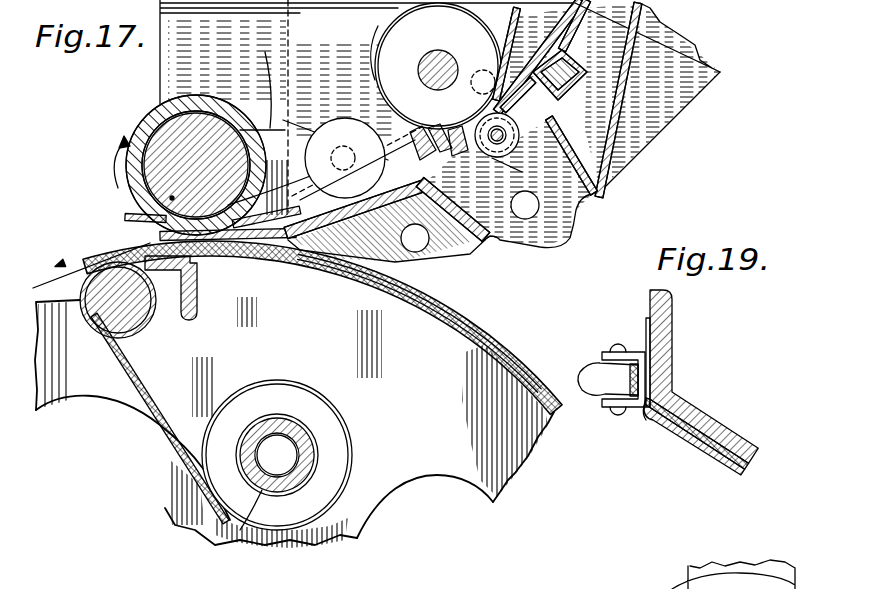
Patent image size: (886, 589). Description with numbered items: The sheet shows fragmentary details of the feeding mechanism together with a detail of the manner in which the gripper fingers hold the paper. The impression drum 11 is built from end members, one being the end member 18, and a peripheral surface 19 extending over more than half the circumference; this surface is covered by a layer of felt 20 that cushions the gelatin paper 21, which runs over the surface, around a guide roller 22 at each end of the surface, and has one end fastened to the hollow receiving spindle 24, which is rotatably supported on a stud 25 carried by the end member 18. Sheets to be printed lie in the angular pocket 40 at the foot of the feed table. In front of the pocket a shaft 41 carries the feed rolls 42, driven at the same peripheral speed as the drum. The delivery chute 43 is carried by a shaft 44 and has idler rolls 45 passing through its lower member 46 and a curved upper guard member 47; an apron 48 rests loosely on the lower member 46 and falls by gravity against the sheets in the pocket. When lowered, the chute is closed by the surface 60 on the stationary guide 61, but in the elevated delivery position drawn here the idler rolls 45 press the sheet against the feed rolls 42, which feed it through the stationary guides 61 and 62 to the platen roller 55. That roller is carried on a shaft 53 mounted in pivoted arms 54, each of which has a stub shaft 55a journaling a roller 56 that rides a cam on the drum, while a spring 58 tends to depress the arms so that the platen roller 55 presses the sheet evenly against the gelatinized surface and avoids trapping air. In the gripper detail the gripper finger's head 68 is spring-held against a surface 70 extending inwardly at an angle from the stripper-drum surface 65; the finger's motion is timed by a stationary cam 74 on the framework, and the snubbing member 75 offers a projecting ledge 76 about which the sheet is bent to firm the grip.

In FIG. 17, the impression drum 11 is at (50, 297).
In FIG. 17, the end member 18 is at (294, 422).
In FIG. 17, the peripheral surface 19 is at (449, 324).
In FIG. 17, the layer of felt 20 is at (482, 346).
In FIG. 17, the gelatin paper 21 is at (168, 451).
In FIG. 17, the guide roller 22 is at (100, 322).
In FIG. 17, the hollow receiving spindle 24 is at (240, 530).
In FIG. 17, the stud 25 is at (277, 434).
In FIG. 17, the angular pocket 40 is at (608, 160).
In FIG. 17, the shaft 41 is at (437, 52).
In FIG. 17, the feed rolls 42 is at (392, 46).
In FIG. 17, the delivery chute 43 is at (455, 142).
In FIG. 17, the shaft 44 is at (648, 128).
In FIG. 17, the idler rolls 45 is at (520, 146).
In FIG. 17, the lower member 46 is at (521, 172).
In FIG. 17, the curved upper guard member 47 is at (519, 16).
In FIG. 17, the apron 48 is at (578, 20).
In FIG. 17, the shaft 53 is at (201, 96).
In FIG. 17, the pivoted arms 54 is at (262, 78).
In FIG. 17, the platen roller 55 is at (154, 121).
In FIG. 17, the stub shaft 55a is at (205, 258).
In FIG. 17, the roller 56 is at (170, 198).
In FIG. 17, the spring 58 is at (125, 218).
In FIG. 17, the surface 60 is at (497, 232).
In FIG. 17, the stationary guide 61 is at (378, 240).
In FIG. 17, the stationary guide 62 is at (350, 165).
In FIG. 19, the surface 65 is at (734, 478).
In FIG. 19, the head 68 is at (638, 353).
In FIG. 19, the surface 70 is at (650, 303).
In FIG. 19, the stationary cam 74 is at (672, 582).
In FIG. 19, the snubbing member 75 is at (702, 466).
In FIG. 19, the projecting ledge 76 is at (643, 420).